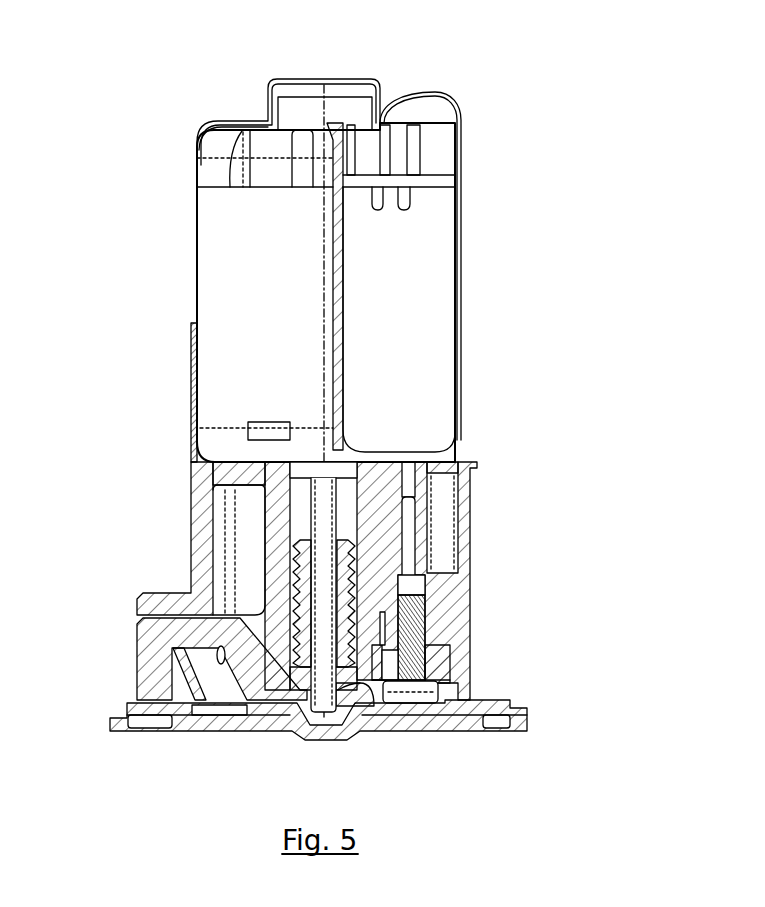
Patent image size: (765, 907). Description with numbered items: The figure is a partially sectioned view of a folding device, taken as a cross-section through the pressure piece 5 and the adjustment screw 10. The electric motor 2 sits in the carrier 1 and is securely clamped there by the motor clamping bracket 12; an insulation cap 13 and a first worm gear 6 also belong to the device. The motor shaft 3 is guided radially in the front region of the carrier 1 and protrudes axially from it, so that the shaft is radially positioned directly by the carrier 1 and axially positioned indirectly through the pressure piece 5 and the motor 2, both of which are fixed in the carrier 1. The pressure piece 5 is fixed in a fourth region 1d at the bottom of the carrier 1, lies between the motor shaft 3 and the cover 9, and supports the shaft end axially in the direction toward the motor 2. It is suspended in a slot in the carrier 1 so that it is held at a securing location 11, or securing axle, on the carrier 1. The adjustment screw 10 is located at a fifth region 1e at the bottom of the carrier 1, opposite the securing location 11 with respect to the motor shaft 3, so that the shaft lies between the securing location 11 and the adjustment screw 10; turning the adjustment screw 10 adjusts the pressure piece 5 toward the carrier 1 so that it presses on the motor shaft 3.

The carrier 1 is at (465, 402).
The fourth region of the carrier 1d is at (347, 683).
The fifth region of the carrier 1e is at (437, 601).
The motor 2 is at (418, 268).
The motor shaft 3 is at (350, 532).
The pressure piece 5 is at (447, 665).
The first worm gear 6 is at (413, 553).
The cover 9 is at (525, 717).
The adjustment screw 10 is at (445, 690).
The securing location 11 is at (133, 638).
The motor clamping bracket 12 is at (455, 98).
The insulation cap 13 is at (232, 122).